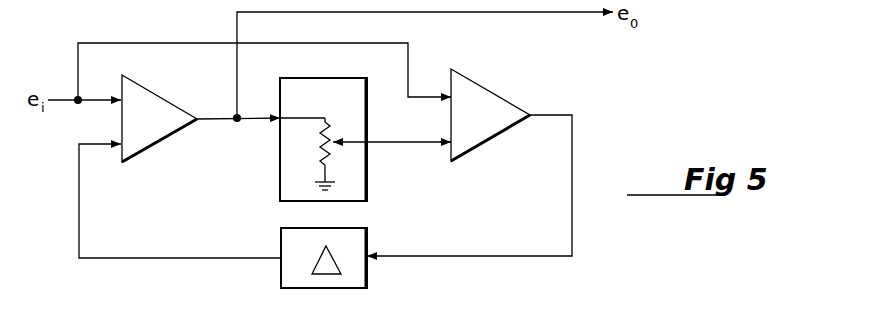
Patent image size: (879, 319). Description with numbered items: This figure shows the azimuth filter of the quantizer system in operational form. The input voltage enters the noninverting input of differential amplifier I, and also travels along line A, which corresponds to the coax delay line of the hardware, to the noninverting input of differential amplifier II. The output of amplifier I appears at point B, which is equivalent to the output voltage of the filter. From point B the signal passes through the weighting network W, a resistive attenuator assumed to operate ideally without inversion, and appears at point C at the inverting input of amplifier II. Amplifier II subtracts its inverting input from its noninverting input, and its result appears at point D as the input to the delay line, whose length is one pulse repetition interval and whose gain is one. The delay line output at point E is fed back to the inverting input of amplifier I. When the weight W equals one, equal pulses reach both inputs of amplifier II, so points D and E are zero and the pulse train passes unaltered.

The line A is at (118, 42).
The point B is at (212, 122).
The point C is at (407, 143).
The point D is at (468, 254).
The point E is at (210, 256).
The differential amplifier I is at (159, 118).
The differential amplifier II is at (490, 115).
The weighting network W is at (323, 139).